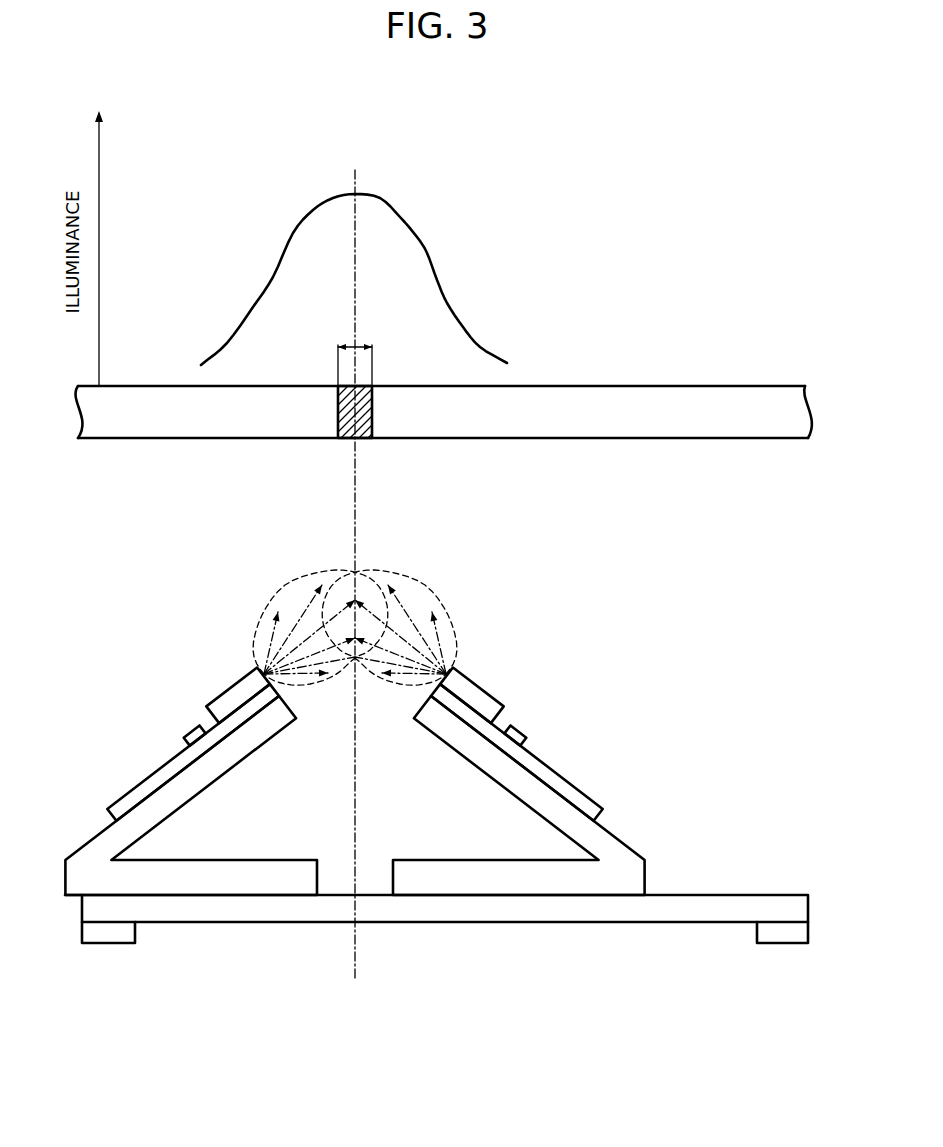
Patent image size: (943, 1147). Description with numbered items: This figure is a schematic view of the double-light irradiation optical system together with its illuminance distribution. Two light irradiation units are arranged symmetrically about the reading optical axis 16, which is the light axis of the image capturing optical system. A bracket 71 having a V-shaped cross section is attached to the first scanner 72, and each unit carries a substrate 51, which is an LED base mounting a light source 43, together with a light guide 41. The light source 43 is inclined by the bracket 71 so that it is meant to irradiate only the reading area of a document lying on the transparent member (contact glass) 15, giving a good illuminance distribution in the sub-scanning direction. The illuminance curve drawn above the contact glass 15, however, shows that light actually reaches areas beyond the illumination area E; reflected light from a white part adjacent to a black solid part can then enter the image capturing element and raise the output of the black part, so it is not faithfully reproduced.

The transparent member (contact glass) 15 is at (671, 400).
The reading optical axis 16 is at (357, 938).
The light guide 41 is at (483, 693).
The light source 43 is at (517, 731).
The substrate 51 is at (563, 781).
The bracket 71 is at (605, 836).
The first scanner 72 is at (742, 900).
The illumination area E is at (357, 344).